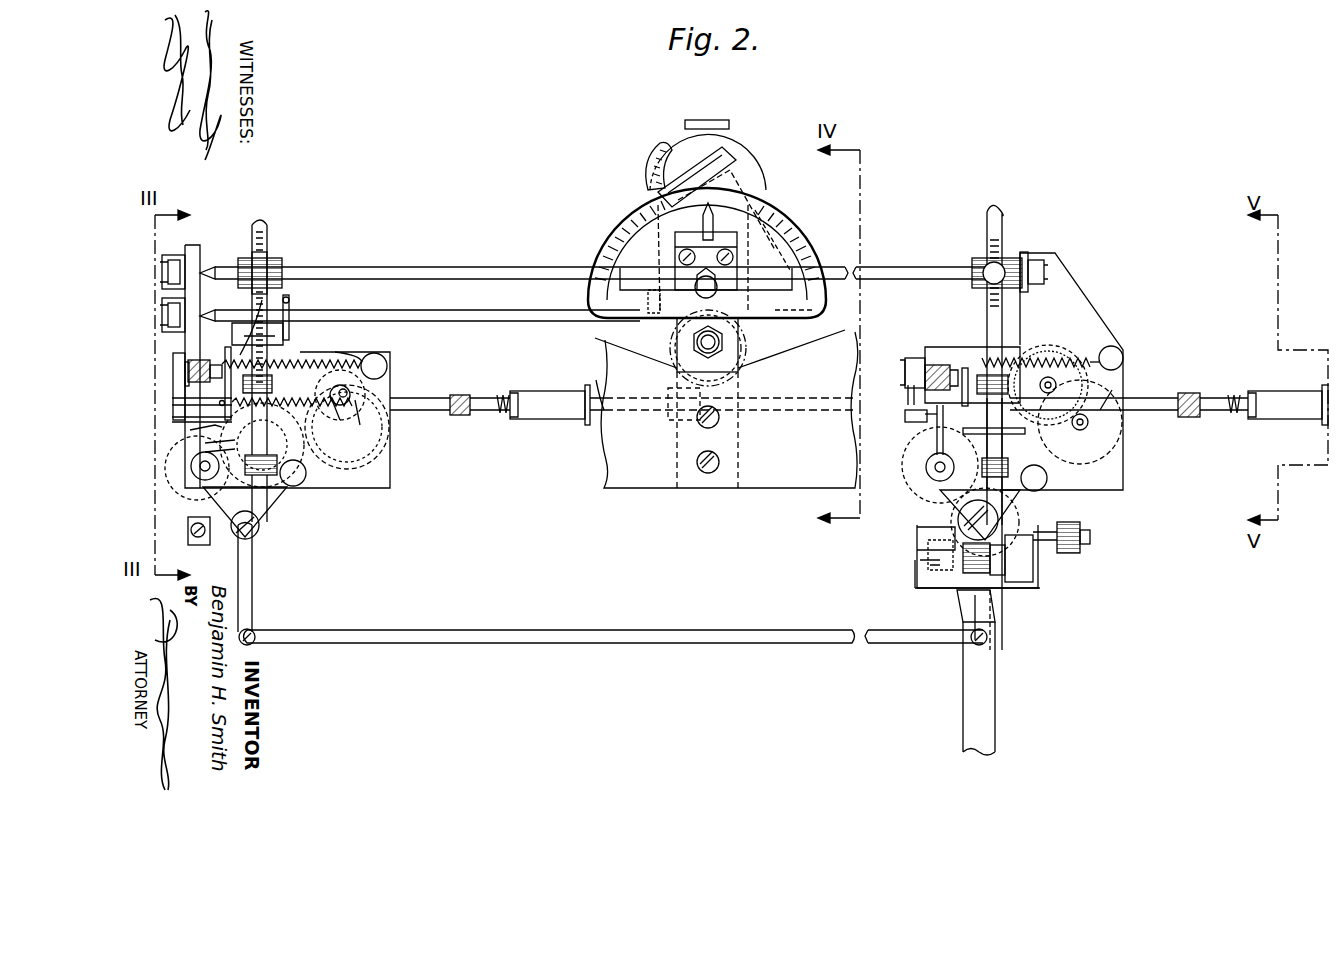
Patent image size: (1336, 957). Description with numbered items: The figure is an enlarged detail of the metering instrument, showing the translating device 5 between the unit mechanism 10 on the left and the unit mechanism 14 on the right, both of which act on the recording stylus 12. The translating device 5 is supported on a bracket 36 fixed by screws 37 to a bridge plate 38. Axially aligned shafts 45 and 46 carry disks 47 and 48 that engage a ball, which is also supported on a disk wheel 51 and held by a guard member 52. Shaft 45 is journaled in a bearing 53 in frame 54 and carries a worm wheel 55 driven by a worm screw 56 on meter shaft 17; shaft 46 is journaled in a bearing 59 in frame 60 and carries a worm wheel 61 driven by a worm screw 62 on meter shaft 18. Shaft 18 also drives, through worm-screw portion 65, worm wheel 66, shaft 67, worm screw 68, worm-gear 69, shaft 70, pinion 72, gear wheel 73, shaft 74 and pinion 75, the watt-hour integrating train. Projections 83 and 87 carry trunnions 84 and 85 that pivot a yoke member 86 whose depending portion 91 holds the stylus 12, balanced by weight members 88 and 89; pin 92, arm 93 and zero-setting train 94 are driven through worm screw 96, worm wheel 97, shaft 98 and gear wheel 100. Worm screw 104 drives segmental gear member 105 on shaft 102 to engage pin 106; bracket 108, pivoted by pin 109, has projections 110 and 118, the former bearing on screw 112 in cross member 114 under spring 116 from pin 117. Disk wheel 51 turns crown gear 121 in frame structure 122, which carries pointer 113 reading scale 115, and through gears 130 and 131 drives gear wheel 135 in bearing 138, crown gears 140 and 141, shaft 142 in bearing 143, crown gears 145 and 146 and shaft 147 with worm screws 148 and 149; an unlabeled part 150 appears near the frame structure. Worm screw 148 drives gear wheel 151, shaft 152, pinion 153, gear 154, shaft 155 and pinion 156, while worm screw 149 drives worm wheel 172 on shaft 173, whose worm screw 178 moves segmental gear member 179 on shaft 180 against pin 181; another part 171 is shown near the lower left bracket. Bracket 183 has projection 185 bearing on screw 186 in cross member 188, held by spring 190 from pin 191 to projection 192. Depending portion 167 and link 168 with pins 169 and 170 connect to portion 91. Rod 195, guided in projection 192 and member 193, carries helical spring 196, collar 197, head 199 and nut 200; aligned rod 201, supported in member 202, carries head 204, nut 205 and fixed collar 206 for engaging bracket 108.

The translating device 5 is at (602, 185).
The unit mechanism 10 is at (322, 244).
The recording element or stylus 12 is at (975, 732).
The unit mechanism 14 is at (1046, 226).
The shaft 17 is at (256, 232).
The shaft 18 is at (987, 225).
The bracket 36 is at (730, 440).
The screws 37 is at (698, 458).
The bridge member or plate 38 is at (652, 495).
The shaft 45 is at (510, 280).
The shaft 46 is at (898, 280).
The disk or wheel 47 is at (664, 258).
The disk or wheel 48 is at (825, 312).
The disk wheel 51 is at (650, 152).
The guard member 52 is at (706, 120).
The bearing 53 is at (175, 255).
The frame 54 is at (205, 260).
The worm wheel 55 is at (268, 262).
The worm screw 56 is at (300, 262).
The bearing 59 is at (1045, 258).
The frame 60 is at (1062, 280).
The worm wheel 61 is at (988, 250).
The worm screw 62 is at (972, 265).
The worm-screw portion 65 is at (1005, 448).
The worm wheel 66 is at (1060, 445).
The shaft 67 is at (1047, 480).
The worm screw 68 is at (980, 372).
The worm-gear 69 is at (1048, 345).
The shaft 70 is at (1050, 378).
The pinion 72 is at (1060, 372).
The gear wheel 73 is at (1110, 398).
The shaft 74 is at (1086, 428).
The pinion 75 is at (1092, 418).
The lateral projection 83 is at (950, 545).
The pin or trunnion 84 is at (917, 538).
The pin or trunnion 85 is at (1040, 548).
The yoke member 86 is at (1035, 592).
The lateral projection 87 is at (1020, 542).
The weight member 88 is at (1090, 540).
The weight member 89 is at (1072, 522).
The depending portion 91 is at (968, 605).
The pin 92 is at (965, 580).
The arm 93 is at (1000, 578).
The zero-setting worm and gear train 94 is at (930, 570).
The worm screw 96 is at (1010, 515).
The worm wheel 97 is at (908, 468).
The shaft 98 is at (940, 493).
The gear wheel 100 is at (1000, 522).
The shaft 102 is at (905, 415).
The worm screw 104 is at (926, 465).
The segmental gear member 105 is at (935, 448).
The pin 106 is at (932, 434).
The bracket 108 is at (908, 390).
The pin 109 is at (908, 568).
The upwardly projecting portion 110 is at (900, 358).
The adjustable screw 112 is at (916, 358).
The pointer 113 is at (714, 215).
The cross member 114 is at (935, 365).
The scale 115 is at (815, 232).
The spring 116 is at (1030, 355).
The pin 117 is at (1123, 352).
The upwardly projecting portion 118 is at (965, 365).
The crown gear wheel 121 is at (662, 143).
The frame structure 122 is at (620, 205).
The gear wheel 130 is at (800, 210).
The gear wheel 131 is at (730, 150).
The gear wheel 135 is at (740, 362).
The bearing 138 is at (722, 342).
The crown gear wheel 140 is at (742, 340).
The crown gear wheel 141 is at (648, 303).
The shaft 142 is at (510, 323).
The bearing 143 is at (168, 318).
The crown gear wheel 145 is at (290, 305).
The crown gear wheel 146 is at (284, 338).
The shaft 147 is at (278, 440).
The worm screw 148 is at (292, 382).
The worm screw 149 is at (296, 486).
The arm 150 is at (745, 165).
The gear wheel 151 is at (340, 350).
The shaft 152 is at (343, 390).
The pinion 153 is at (365, 380).
The gear 154 is at (368, 433).
The shaft 155 is at (380, 395).
The pinion 156 is at (358, 440).
The depending arm or portion 167 is at (250, 590).
The link 168 is at (592, 630).
The pin 169 is at (255, 630).
The pin 170 is at (988, 640).
The stud 171 is at (200, 545).
The worm wheel 172 is at (190, 497).
The shaft 173 is at (191, 467).
The worm screw 178 is at (185, 480).
The segmental gear member 179 is at (205, 447).
The shaft 180 is at (172, 402).
The pin 181 is at (190, 432).
The bracket 183 is at (173, 378).
The upwardly projecting portion 185 is at (173, 362).
The adjustable screw 186 is at (187, 362).
The cross member 188 is at (205, 353).
The spring 190 is at (340, 355).
The pin 191 is at (388, 362).
The upwardly projecting portion 192 is at (235, 325).
The stationary member 193 is at (465, 415).
The longitudinally slidable rod 195 is at (425, 410).
The helical spring 196 is at (280, 423).
The collar 197 is at (338, 410).
The push member or head 199 is at (555, 420).
The nut 200 is at (516, 392).
The longitudinally slidable rod 201 is at (600, 392).
The stationary member 202 is at (1190, 418).
The push member or head 204 is at (1288, 415).
The nut 205 is at (1252, 392).
The fixed collar 206 is at (982, 425).